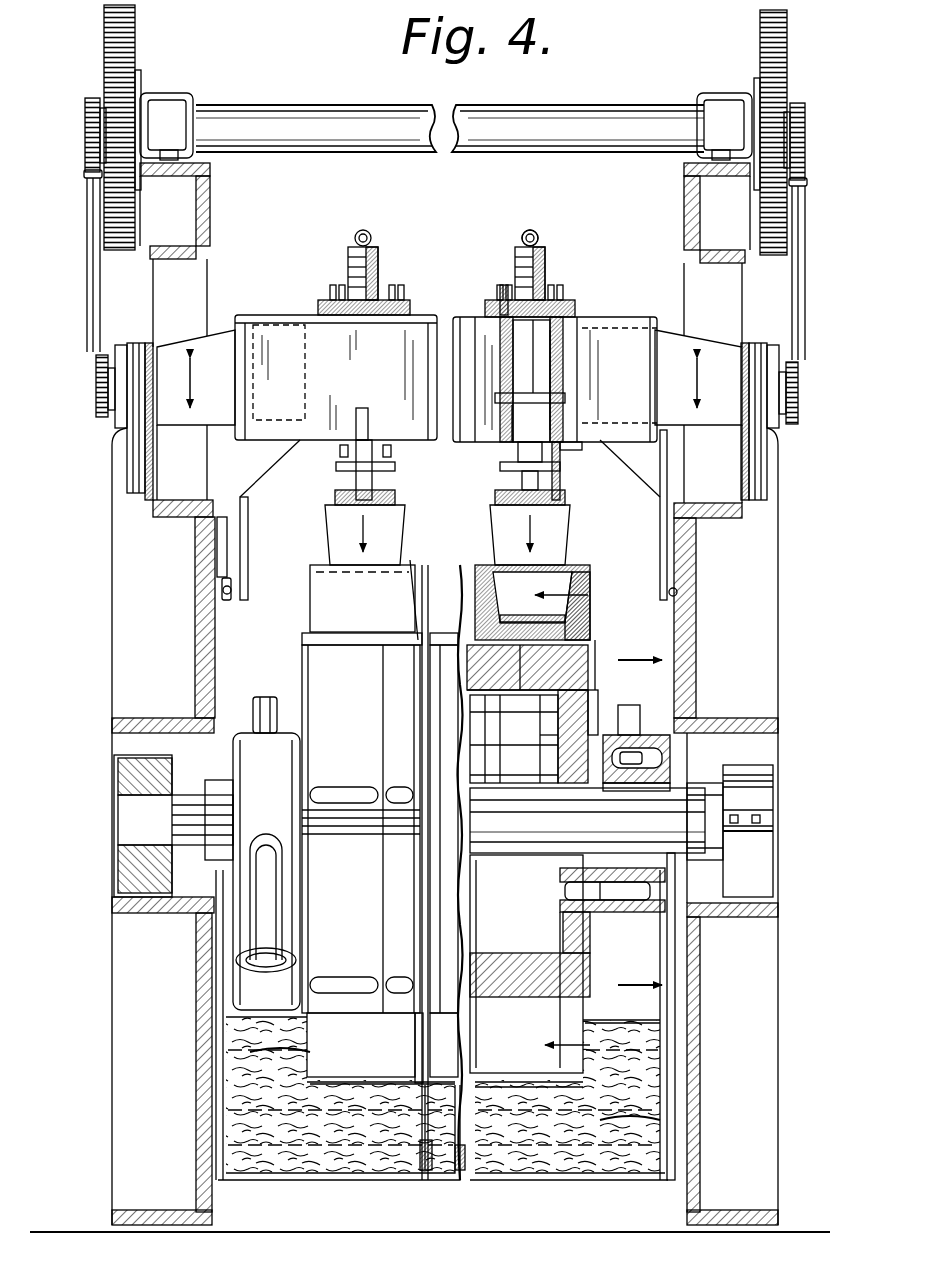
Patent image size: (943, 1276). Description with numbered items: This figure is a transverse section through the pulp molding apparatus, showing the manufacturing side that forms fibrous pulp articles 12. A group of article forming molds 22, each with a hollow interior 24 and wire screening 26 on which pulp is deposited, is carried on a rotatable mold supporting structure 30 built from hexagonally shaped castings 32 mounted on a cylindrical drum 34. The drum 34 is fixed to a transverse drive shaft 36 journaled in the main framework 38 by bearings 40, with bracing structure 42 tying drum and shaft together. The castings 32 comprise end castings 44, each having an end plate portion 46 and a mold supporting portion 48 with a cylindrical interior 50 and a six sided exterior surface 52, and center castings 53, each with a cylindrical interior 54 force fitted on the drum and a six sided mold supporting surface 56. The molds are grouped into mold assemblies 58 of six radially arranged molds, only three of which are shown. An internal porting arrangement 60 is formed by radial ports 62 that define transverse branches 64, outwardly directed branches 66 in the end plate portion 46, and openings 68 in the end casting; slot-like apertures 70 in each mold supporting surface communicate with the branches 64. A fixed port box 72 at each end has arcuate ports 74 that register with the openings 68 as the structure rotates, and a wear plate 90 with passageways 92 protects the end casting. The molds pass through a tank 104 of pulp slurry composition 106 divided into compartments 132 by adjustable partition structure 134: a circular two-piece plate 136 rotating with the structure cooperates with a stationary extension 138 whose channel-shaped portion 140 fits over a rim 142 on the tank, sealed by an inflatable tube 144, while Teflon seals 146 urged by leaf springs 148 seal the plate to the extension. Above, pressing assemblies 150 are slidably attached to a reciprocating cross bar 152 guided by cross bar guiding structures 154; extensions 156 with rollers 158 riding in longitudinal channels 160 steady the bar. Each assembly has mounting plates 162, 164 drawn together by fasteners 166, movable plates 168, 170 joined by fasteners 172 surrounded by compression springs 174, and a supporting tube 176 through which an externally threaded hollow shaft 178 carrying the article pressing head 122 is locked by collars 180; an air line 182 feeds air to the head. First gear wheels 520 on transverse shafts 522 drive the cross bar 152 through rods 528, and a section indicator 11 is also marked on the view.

The section line / direction indicator 11 is at (632, 914).
The fibrous pulp article 12 is at (582, 572).
The article forming mold 22 is at (325, 590).
The hollow interior 24 is at (588, 652).
The wire screening 26 is at (596, 577).
The rotatable mold supporting structure 30 is at (300, 660).
The hexagonally shaped casting 32 is at (303, 703).
The cylindrical drum 34 is at (514, 740).
The transverse drive shaft 36 is at (160, 808).
The main framework 38 is at (168, 913).
The bearing 40 is at (145, 775).
The bracing structure 42 is at (540, 760).
The end casting 44 is at (605, 715).
The end plate portion 46 is at (598, 692).
The mold supporting portion 48 is at (596, 660).
The cylindrical interior 50 is at (540, 975).
The six sided exterior surface 52 is at (564, 606).
The center casting 53 is at (458, 665).
The cylindrical interior 54 is at (514, 739).
The six sided exterior mold supporting surface 56 is at (532, 611).
The mold assembly 58 is at (418, 552).
The internal porting arrangement 60 is at (642, 735).
The transverse passageway 62 is at (514, 718).
The transverse branch 64 is at (468, 665).
The outwardly directed branch 66 is at (580, 730).
The opening 68 is at (606, 778).
The slot-like aperture 70 is at (335, 795).
The fixed port box 72 is at (662, 791).
The arcuate slot-like port 74 is at (645, 758).
The wear plate 90 is at (598, 890).
The passageway 92 is at (608, 892).
The tank 104 is at (290, 1180).
The pulp slurry composition 106 is at (255, 1146).
The article pressing head 122 is at (335, 546).
The compartment 132 is at (375, 1160).
The adjustable partition structure 134 is at (420, 1100).
The circular two-piece plate 136 is at (418, 1030).
The stationary extension 138 is at (560, 1110).
The channel-shaped portion 140 is at (560, 1130).
The rim 142 is at (425, 1172).
The inflatable tube 144 is at (463, 1172).
The Teflon seal 146 is at (420, 1075).
The leaf spring 148 is at (440, 1082).
The pressing assembly 150 is at (518, 450).
The reciprocating cross bar 152 is at (328, 385).
The cross bar guiding structure 154 is at (138, 463).
The extension 156 is at (250, 530).
The roller 158 is at (230, 596).
The longitudinal channel 160 is at (218, 660).
The upper mounting plate 162 is at (572, 315).
The mounting plate 164 is at (560, 468).
The bolt-like fastener 166 is at (582, 446).
The upper movable plate 168 is at (548, 292).
The lower movable plate 170 is at (512, 410).
The bolt-like fastener 172 is at (566, 402).
The compression spring 174 is at (564, 372).
The supporting tube 176 is at (480, 492).
The externally threaded hollow shaft 178 is at (560, 500).
The internally threaded locking collar 180 is at (505, 285).
The air line 182 is at (538, 234).
The first gear wheel 520 is at (108, 45).
The transverse shaft 522 is at (86, 120).
The rod 528 is at (88, 274).